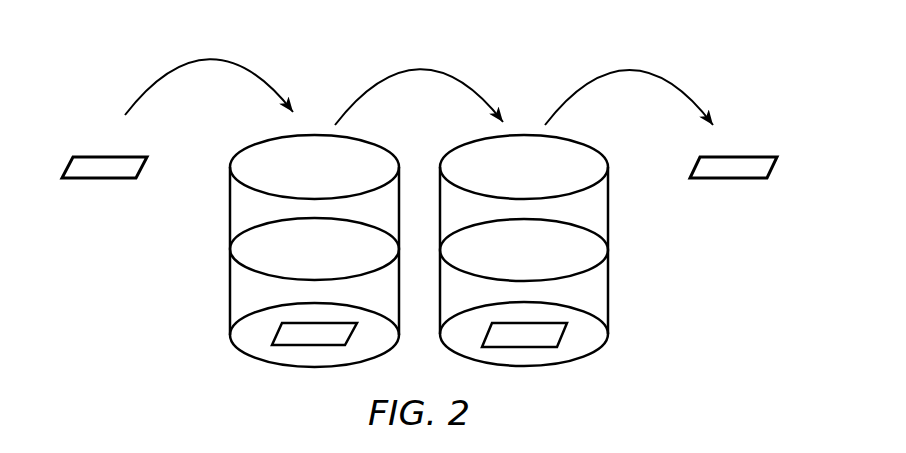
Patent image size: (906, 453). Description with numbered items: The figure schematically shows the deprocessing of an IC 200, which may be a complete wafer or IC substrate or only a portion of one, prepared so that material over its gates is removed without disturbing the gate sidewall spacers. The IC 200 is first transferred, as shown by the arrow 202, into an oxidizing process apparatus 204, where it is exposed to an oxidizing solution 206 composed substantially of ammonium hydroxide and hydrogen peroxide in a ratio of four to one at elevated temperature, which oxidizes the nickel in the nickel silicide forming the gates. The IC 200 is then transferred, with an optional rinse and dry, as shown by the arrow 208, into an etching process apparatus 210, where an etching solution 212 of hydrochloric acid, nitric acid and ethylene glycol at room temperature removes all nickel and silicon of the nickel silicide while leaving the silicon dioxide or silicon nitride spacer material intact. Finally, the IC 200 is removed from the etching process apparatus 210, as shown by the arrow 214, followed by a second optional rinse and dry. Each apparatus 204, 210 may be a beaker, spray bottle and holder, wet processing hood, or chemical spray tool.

The IC 200 is at (93, 155).
The arrow 202 is at (201, 60).
The oxidizing process apparatus 204 is at (230, 203).
The oxidizing solution 206 is at (230, 287).
The arrow 208 is at (412, 70).
The etching process apparatus 210 is at (608, 203).
The etching solution 212 is at (608, 288).
The arrow 214 is at (633, 70).